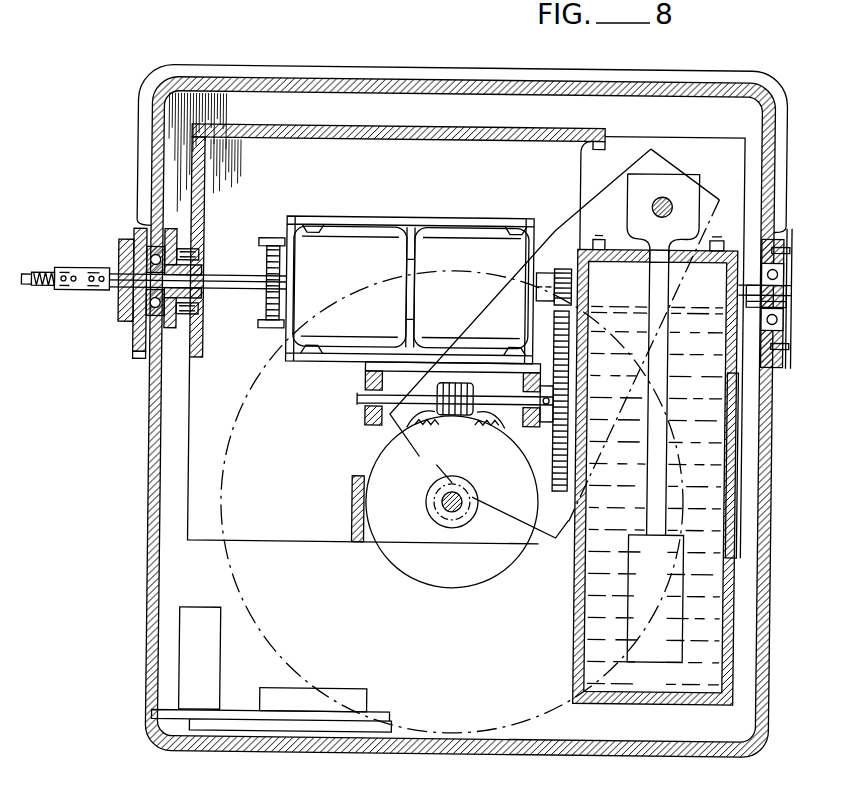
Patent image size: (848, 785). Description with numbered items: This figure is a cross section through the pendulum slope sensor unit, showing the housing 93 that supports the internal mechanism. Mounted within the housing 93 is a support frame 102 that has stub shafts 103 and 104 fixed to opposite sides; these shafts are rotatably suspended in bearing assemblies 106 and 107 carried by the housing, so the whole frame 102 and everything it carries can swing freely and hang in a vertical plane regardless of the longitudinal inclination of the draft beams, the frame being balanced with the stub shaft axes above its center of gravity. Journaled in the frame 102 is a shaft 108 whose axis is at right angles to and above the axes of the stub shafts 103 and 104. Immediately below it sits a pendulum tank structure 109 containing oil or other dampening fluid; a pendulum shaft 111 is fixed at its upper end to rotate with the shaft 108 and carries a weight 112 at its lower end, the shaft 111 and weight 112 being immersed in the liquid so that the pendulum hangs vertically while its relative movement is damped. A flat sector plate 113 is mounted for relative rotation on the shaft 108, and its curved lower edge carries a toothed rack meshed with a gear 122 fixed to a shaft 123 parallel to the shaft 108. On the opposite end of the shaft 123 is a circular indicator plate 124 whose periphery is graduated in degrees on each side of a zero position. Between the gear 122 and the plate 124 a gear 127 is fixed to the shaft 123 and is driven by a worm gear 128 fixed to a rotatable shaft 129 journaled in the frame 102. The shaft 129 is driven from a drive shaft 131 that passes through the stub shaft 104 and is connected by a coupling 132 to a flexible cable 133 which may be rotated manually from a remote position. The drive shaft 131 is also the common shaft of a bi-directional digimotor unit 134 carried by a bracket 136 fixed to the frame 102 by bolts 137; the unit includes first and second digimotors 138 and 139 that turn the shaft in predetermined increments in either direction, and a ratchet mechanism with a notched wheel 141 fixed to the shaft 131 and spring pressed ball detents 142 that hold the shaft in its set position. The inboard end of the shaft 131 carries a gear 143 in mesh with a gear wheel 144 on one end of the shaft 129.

The housing 93 is at (150, 597).
The support frame 102 is at (403, 128).
The stub shaft 103 is at (788, 291).
The stub shaft 104 is at (172, 319).
The bearing assembly 106 is at (786, 325).
The bearing assembly 107 is at (136, 332).
The shaft 108 is at (654, 200).
The pendulum tank structure 109 is at (576, 593).
The pendulum shaft 111 is at (668, 453).
The weight 112 is at (630, 570).
The sector plate 113 is at (503, 506).
The gear 122 is at (453, 514).
The shaft 123 is at (440, 508).
The indicator plate 124 is at (466, 681).
The gear 127 is at (456, 588).
The worm gear 128 is at (484, 415).
The shaft 129 is at (428, 417).
The drive shaft 131 is at (242, 277).
The coupling 132 is at (94, 269).
The flexible cable 133 is at (43, 273).
The bi-directional digimotor unit 134 is at (414, 216).
The bracket 136 is at (438, 226).
The bolts 137 is at (318, 222).
The first digimotor 138 is at (368, 240).
The second digimotor 139 is at (480, 234).
The notched wheel 141 is at (262, 312).
The spring pressed ball detents 142 is at (273, 240).
The gear 143 is at (560, 269).
The gear wheel 144 is at (559, 354).